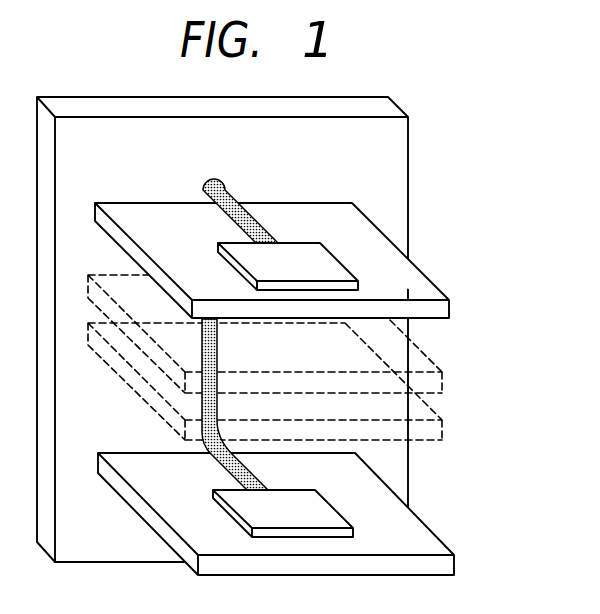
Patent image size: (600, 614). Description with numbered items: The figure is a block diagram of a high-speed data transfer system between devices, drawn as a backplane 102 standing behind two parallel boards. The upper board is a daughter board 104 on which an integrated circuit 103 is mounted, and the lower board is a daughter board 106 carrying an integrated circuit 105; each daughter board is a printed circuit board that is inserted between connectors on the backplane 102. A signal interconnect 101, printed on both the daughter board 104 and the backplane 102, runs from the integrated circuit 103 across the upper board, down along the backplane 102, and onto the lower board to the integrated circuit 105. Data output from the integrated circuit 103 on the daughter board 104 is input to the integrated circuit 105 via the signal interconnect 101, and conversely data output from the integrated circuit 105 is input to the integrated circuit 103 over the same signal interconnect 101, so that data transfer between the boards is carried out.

The signal interconnect 101 is at (235, 195).
The backplane 102 is at (398, 143).
The integrated circuit (LSI) 103 is at (323, 257).
The daughter board 104 is at (438, 312).
The integrated circuit (LSI) 105 is at (327, 514).
The daughter board 106 is at (447, 564).